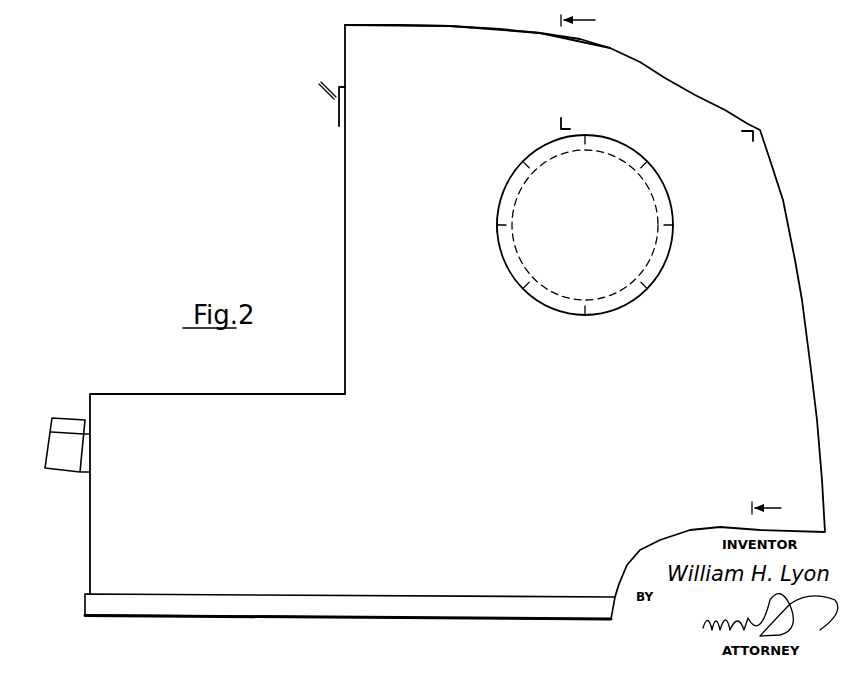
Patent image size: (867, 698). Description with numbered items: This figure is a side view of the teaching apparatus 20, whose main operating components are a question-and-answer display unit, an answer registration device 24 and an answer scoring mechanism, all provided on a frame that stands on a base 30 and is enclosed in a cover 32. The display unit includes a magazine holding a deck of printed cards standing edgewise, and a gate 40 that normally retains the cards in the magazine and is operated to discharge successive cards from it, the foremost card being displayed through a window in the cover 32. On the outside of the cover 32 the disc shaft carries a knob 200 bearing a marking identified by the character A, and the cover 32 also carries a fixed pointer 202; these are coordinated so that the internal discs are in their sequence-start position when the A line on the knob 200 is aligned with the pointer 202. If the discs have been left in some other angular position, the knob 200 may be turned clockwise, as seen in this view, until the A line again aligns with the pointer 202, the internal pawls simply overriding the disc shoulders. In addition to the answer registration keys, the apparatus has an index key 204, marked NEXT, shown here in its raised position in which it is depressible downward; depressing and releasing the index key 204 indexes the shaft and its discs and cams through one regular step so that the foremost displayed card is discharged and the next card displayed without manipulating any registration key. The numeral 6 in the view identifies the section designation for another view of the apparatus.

The teaching apparatus 20 is at (311, 184).
The answer registration device 24 is at (43, 440).
The base 30 is at (315, 614).
The cover 32 is at (483, 42).
The gate 40 is at (334, 102).
The section line 6- 6 is at (678, 266).
The knob 200 is at (622, 148).
The fixed pointer 202 is at (496, 226).
The index key 204 is at (62, 418).